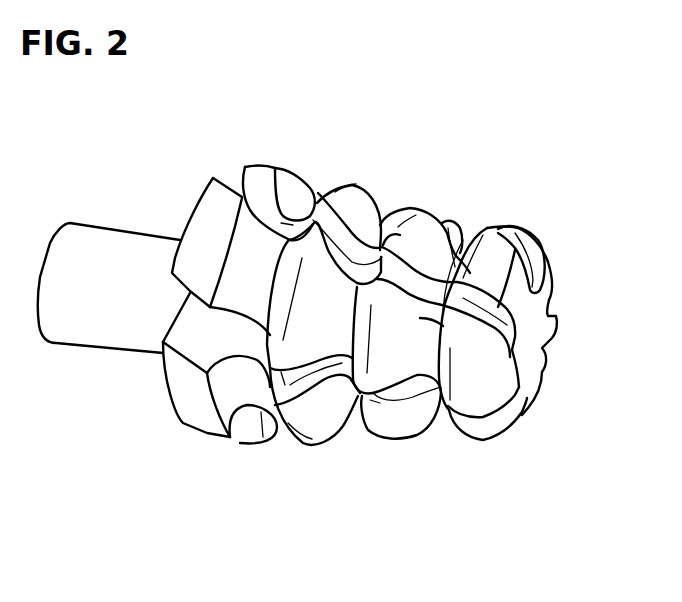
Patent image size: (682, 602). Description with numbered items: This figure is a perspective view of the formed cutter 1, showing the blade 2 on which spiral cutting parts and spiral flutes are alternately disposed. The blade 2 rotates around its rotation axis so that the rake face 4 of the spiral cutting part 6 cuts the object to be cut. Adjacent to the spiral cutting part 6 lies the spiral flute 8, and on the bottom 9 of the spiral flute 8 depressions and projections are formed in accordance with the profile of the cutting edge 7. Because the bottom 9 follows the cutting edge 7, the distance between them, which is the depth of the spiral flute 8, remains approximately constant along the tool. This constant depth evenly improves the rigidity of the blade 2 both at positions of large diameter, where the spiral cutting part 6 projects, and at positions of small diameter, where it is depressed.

The formed cutter 1 is at (572, 75).
The blade 2 is at (467, 460).
The rake face 4 is at (512, 323).
The spiral cutting part 6 is at (506, 268).
The cutting edge 7 is at (487, 228).
The spiral flute 8 is at (508, 343).
The bottom 9 is at (395, 277).